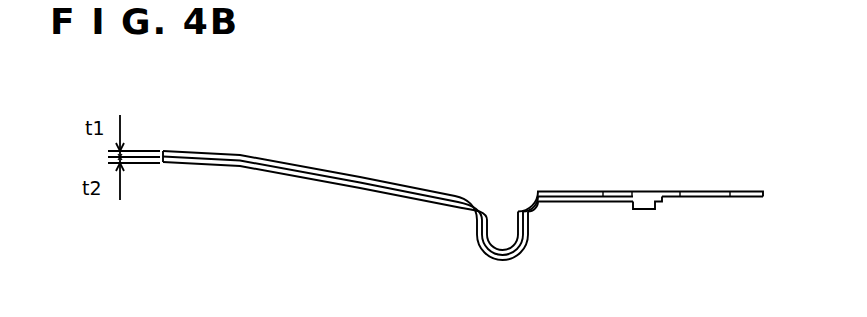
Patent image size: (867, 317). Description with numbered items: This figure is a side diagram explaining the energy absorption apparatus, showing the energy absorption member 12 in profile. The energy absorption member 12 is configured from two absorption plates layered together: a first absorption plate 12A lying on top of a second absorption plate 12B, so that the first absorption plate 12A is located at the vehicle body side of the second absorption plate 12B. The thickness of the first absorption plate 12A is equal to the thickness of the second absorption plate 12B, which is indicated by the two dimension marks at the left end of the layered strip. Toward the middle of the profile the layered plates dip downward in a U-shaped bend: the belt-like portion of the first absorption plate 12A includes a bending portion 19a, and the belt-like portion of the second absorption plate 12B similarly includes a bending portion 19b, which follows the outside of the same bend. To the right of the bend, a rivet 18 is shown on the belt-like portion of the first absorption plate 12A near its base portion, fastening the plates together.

The energy absorption member 12 is at (463, 203).
The first absorption plate 12A is at (371, 177).
The second absorption plate 12B is at (351, 189).
The bending portion 19a is at (494, 237).
The bending portion 19b is at (480, 258).
The rivet 18 is at (648, 210).